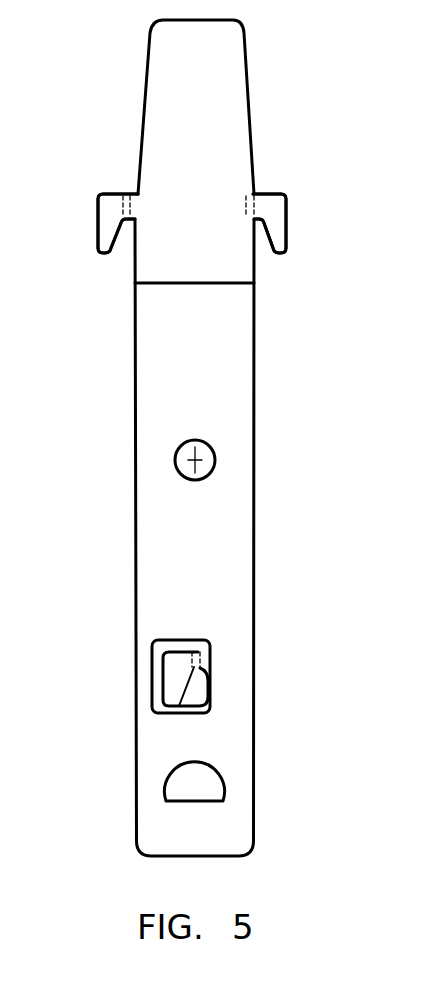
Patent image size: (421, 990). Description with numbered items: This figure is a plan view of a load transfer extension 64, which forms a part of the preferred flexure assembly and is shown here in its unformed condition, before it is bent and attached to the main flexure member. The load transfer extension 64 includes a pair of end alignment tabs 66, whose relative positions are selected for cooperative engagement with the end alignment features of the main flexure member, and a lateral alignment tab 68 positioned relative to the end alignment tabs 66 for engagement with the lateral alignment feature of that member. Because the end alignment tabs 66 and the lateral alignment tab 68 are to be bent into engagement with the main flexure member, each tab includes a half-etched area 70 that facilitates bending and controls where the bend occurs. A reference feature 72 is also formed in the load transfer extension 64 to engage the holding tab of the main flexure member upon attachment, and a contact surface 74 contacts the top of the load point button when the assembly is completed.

The load transfer extension 64 is at (274, 423).
The end alignment tabs 66 is at (95, 226).
The lateral alignment tab 68 is at (173, 668).
The half-etched area 70 is at (131, 193).
The reference feature 72 is at (198, 795).
The contact surface 74 is at (263, 23).